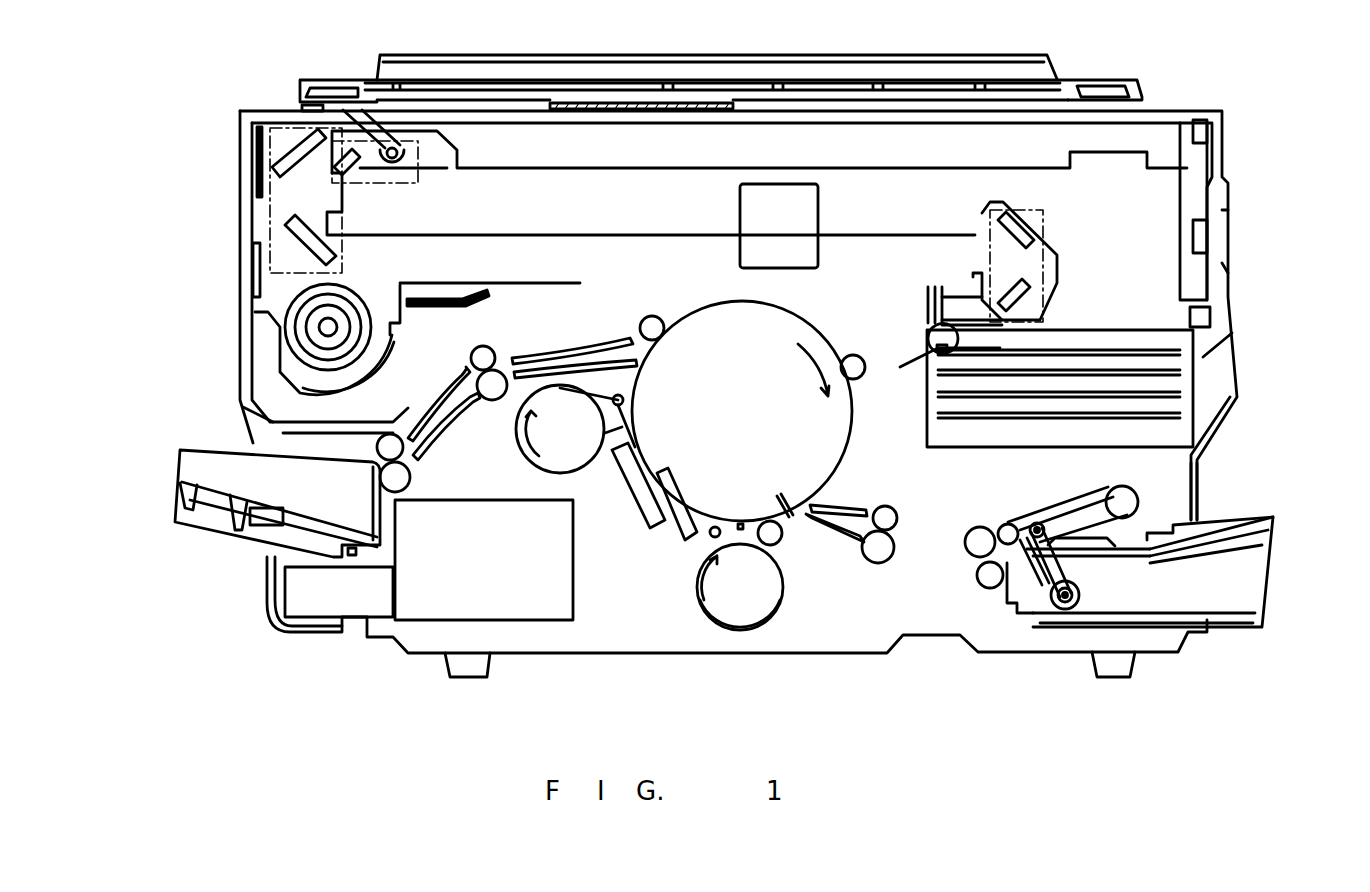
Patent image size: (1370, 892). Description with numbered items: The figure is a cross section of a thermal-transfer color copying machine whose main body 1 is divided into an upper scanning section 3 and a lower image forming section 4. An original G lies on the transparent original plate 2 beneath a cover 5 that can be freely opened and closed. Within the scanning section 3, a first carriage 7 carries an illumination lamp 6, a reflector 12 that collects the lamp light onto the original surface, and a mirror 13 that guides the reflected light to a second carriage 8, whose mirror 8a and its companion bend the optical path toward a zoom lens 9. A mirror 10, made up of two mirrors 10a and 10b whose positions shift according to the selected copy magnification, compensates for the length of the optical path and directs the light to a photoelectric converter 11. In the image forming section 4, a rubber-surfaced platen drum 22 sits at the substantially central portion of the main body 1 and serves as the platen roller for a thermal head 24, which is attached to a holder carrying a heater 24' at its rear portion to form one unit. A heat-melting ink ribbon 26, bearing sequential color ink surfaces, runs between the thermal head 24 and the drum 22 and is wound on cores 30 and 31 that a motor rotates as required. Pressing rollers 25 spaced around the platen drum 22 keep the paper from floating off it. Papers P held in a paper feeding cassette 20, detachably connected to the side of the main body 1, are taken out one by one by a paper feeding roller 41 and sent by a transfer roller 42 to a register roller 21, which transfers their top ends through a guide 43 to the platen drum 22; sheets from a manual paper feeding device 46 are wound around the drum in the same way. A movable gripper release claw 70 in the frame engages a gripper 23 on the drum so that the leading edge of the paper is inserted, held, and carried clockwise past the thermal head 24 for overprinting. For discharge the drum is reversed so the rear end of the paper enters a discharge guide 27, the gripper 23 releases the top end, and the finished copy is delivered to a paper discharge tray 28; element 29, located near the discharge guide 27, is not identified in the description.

The main body 1 is at (1265, 123).
The original plate 2 is at (517, 100).
The scanning section 3 is at (1170, 248).
The image forming section 4 is at (658, 603).
The cover for the original 5 is at (947, 62).
The illumination lamp 6 is at (395, 150).
The first carriage 7 is at (400, 183).
The second carriage 8 is at (288, 230).
The mirror 8a is at (297, 143).
The zoom lens 9 is at (820, 213).
The mirror 10 is at (975, 215).
The mirror 10a is at (1030, 220).
The mirror 10b is at (1030, 308).
The photoelectric converter 11 is at (923, 353).
The reflector 12 is at (405, 150).
The mirror 13 is at (347, 175).
The paper feeding cassette 20 is at (1237, 608).
The register roller 21 is at (897, 514).
The platen drum 22 is at (847, 458).
The gripper 23 is at (782, 497).
The thermal head 24 is at (612, 471).
The heater 24' is at (647, 528).
The pressing rollers 25 is at (640, 323).
The ink ribbon 26 is at (712, 537).
The discharge guide 27 is at (525, 350).
The paper discharge tray 28 is at (222, 483).
The discharge rollers 29 is at (467, 352).
The core 30 is at (540, 470).
The core 31 is at (742, 626).
The paper feeding roller 41 is at (1065, 620).
The transfer roller 42 is at (980, 526).
The guide 43 is at (850, 503).
The manual paper feeding device 46 is at (1238, 518).
The gripper release claw 70 is at (795, 515).
The original G is at (620, 103).
The papers P is at (1260, 590).